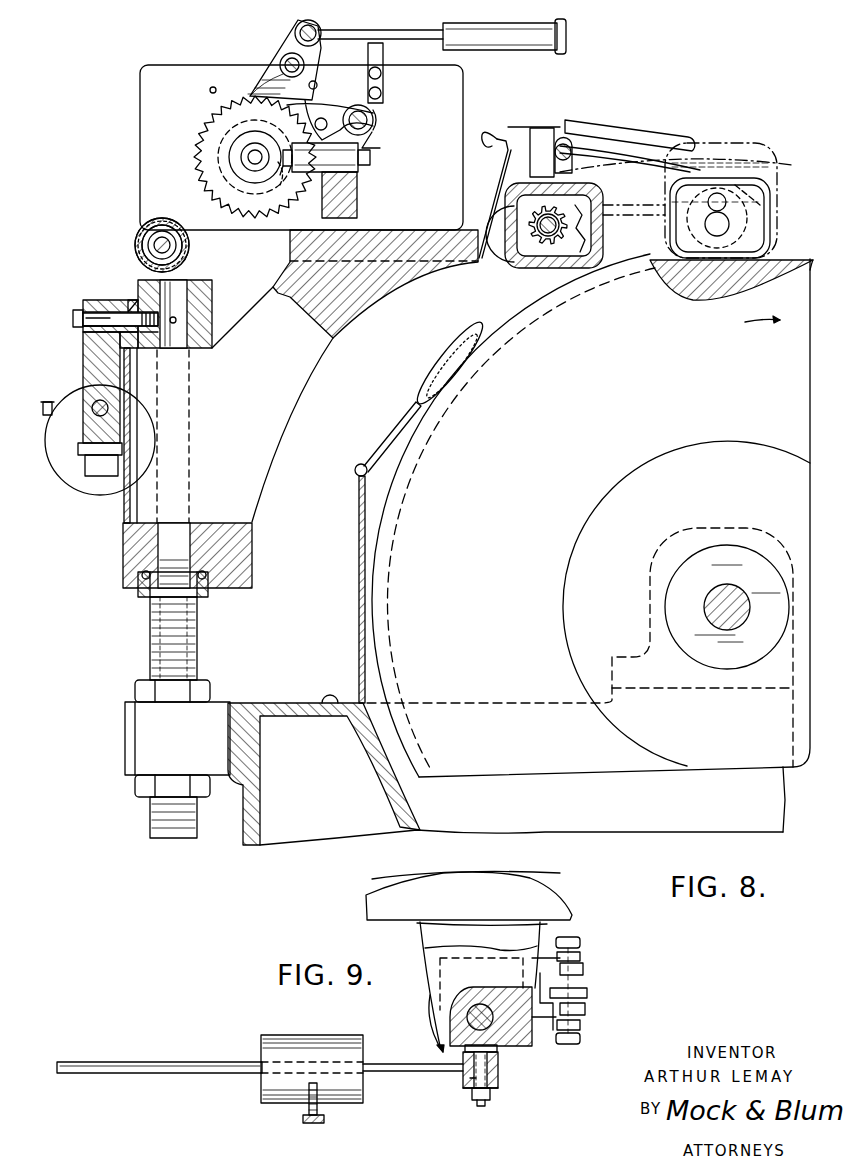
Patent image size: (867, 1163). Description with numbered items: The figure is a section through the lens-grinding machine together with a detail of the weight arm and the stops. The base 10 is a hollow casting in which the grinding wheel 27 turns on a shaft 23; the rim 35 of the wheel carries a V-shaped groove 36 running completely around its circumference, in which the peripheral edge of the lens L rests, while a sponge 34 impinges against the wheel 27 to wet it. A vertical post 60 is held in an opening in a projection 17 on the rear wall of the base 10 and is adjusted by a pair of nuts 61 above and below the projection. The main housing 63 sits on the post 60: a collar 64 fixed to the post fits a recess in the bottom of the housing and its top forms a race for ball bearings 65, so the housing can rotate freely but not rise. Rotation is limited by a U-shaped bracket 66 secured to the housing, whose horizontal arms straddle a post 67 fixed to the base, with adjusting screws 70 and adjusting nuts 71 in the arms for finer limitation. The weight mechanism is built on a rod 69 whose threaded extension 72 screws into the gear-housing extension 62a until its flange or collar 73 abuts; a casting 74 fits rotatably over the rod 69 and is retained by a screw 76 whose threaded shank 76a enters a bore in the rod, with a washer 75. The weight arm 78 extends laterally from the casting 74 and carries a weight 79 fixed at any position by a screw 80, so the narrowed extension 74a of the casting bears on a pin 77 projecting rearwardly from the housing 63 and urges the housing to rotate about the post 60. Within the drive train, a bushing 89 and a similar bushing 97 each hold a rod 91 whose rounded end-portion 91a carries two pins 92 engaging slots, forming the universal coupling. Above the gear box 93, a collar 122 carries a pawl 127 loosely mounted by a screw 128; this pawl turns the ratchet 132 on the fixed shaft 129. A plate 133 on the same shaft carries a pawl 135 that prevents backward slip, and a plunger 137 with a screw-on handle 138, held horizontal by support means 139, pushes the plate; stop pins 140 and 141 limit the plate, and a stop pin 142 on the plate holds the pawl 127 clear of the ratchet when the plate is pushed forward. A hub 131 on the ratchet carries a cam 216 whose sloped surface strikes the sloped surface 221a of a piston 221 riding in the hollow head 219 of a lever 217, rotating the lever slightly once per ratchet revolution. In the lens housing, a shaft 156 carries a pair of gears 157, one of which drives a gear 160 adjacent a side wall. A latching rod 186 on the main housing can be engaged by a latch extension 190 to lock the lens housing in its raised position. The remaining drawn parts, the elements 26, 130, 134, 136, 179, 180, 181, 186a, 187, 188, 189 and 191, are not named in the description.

In FIG. 8, the base 10 is at (395, 820).
In FIG. 8, the projection 17 is at (125, 740).
In FIG. 8, the shaft 23 is at (712, 600).
In FIG. 8, the wheel hub 26 is at (756, 456).
In FIG. 8, the grinding wheel 27 is at (733, 343).
In FIG. 8, the sponge 34 is at (447, 355).
In FIG. 8, the rim 35 is at (772, 254).
In FIG. 8, the V-shaped groove 36 is at (778, 258).
In FIG. 8, the vertical post 60 is at (150, 640).
In FIG. 9, the vertical post 60 is at (466, 1014).
In FIG. 8, the nuts 61 is at (205, 686).
In FIG. 8, the extension of gear housing 62a is at (206, 282).
In FIG. 9, the extension of gear housing 62a is at (532, 1046).
In FIG. 8, the main housing 63 is at (278, 482).
In FIG. 9, the main housing 63 is at (555, 888).
In FIG. 8, the collar 64 is at (138, 590).
In FIG. 8, the ball bearings 65 is at (143, 572).
In FIG. 9, the bracket 66 is at (583, 968).
In FIG. 9, the post 67 is at (587, 990).
In FIG. 8, the rod 69 is at (103, 300).
In FIG. 9, the adjusting screws 70 is at (578, 938).
In FIG. 9, the adjusting nuts 71 is at (580, 955).
In FIG. 8, the threaded extension 72 is at (150, 334).
In FIG. 8, the flange or collar 73 is at (130, 300).
In FIG. 9, the flange or collar 73 is at (497, 1052).
In FIG. 8, the casting 74 is at (83, 352).
In FIG. 9, the casting 74 is at (498, 1077).
In FIG. 8, the narrowed extension 74a is at (95, 470).
In FIG. 8, the washer 75 is at (83, 330).
In FIG. 9, the washer 75 is at (490, 1092).
In FIG. 8, the screw 76 is at (73, 312).
In FIG. 9, the screw 76 is at (480, 1106).
In FIG. 8, the threaded shank 76a is at (88, 300).
In FIG. 9, the threaded shank 76a is at (470, 1080).
In FIG. 8, the pin 77 is at (80, 446).
In FIG. 8, the weight arm 78 is at (92, 410).
In FIG. 9, the weight arm 78 is at (106, 1068).
In FIG. 8, the weight 79 is at (96, 495).
In FIG. 9, the weight 79 is at (284, 1035).
In FIG. 8, the screw 80 is at (48, 402).
In FIG. 9, the screw 80 is at (308, 1123).
In FIG. 8, the bushing 89 is at (140, 232).
In FIG. 8, the rod 91 is at (142, 245).
In FIG. 8, the rounded end-portion 91a is at (176, 240).
In FIG. 8, the pins 92 is at (180, 262).
In FIG. 8, the gear box 93 is at (466, 93).
In FIG. 8, the bushing 97 is at (170, 250).
In FIG. 8, the collar 122 is at (373, 114).
In FIG. 8, the pawl 127 is at (320, 106).
In FIG. 8, the screw 128 is at (366, 136).
In FIG. 8, the fixed shaft 129 is at (250, 160).
In FIG. 8, the hub 130 is at (241, 157).
In FIG. 8, the hub 131 is at (232, 143).
In FIG. 8, the ratchet 132 is at (222, 120).
In FIG. 8, the plate 133 is at (298, 30).
In FIG. 8, the pivot 134 is at (284, 57).
In FIG. 8, the pawl 135 is at (265, 78).
In FIG. 8, the pivot pin 136 is at (317, 26).
In FIG. 8, the plunger 137 is at (372, 30).
In FIG. 8, the screw-on handle 138 is at (508, 50).
In FIG. 8, the support means 139 is at (383, 56).
In FIG. 8, the stop pin 140 is at (316, 82).
In FIG. 8, the stop pin 141 is at (210, 89).
In FIG. 8, the stop pin 142 is at (327, 127).
In FIG. 8, the shaft 156 is at (505, 250).
In FIG. 8, the gears 157 is at (545, 238).
In FIG. 8, the gear 160 is at (603, 241).
In FIG. 8, the chain 179 is at (666, 216).
In FIG. 8, the lamp housing 180 is at (772, 190).
In FIG. 8, the lamp 181 is at (772, 212).
In FIG. 8, the latching rod 186 is at (497, 172).
In FIG. 8, the wire end 186a is at (510, 135).
In FIG. 8, the arm 187 is at (652, 135).
In FIG. 8, the pivot 188 is at (568, 148).
In FIG. 8, the bracket 189 is at (560, 140).
In FIG. 8, the latch extension 190 is at (532, 132).
In FIG. 8, the guide 191 is at (578, 152).
In FIG. 8, the cam 216 is at (278, 185).
In FIG. 8, the lever 217 is at (357, 195).
In FIG. 8, the head 219 is at (350, 168).
In FIG. 8, the piston 221 is at (288, 166).
In FIG. 8, the sloped surface 221a is at (281, 176).
In FIG. 8, the lens L is at (742, 190).